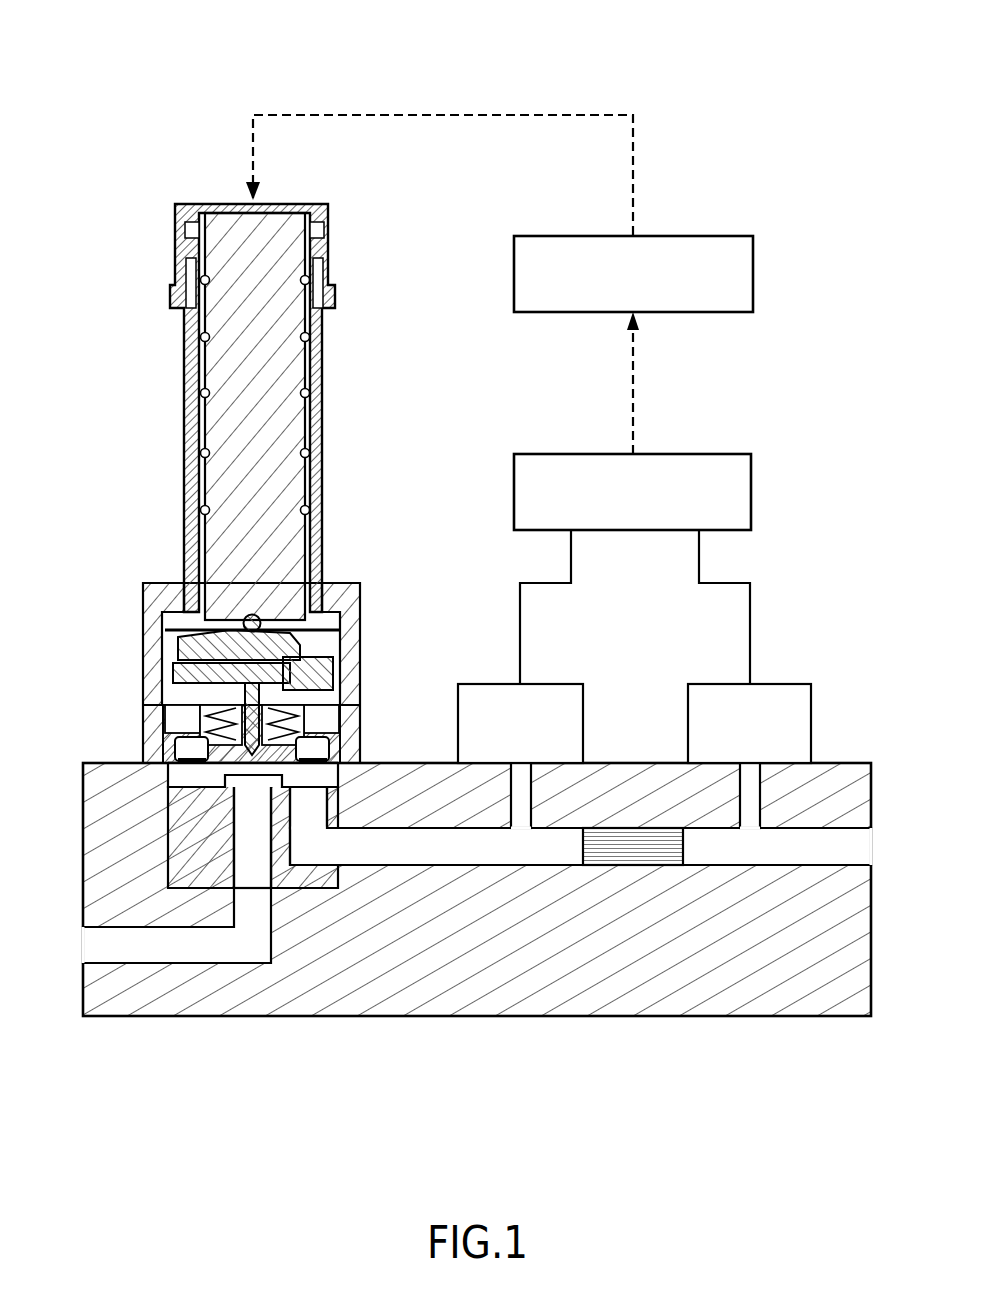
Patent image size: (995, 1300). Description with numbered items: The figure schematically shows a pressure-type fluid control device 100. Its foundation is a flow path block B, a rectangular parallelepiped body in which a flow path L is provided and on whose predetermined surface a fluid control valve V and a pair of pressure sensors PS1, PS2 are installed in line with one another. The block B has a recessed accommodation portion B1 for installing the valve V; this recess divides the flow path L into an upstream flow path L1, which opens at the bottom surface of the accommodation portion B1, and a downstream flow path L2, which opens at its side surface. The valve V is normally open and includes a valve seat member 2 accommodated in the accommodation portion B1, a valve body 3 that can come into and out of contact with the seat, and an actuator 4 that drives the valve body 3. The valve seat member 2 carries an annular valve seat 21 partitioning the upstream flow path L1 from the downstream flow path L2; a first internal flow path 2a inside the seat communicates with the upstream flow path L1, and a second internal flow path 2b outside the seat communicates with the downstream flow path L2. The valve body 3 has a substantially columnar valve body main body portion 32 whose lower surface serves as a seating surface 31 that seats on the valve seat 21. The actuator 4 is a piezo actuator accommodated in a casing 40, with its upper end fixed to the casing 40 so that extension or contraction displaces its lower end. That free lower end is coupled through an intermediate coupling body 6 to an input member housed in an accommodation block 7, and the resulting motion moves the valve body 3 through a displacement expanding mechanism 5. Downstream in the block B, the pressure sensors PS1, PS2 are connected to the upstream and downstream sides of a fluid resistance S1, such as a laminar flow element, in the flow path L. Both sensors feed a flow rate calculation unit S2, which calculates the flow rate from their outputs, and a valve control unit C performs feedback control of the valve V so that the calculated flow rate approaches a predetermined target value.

The fluid control device 100 is at (172, 80).
The fluid control valve V is at (150, 373).
The casing 40 is at (184, 430).
The actuator 4 is at (208, 484).
The intermediate coupling body 6 is at (259, 616).
The accommodation block 7 is at (362, 655).
The displacement expanding mechanism 5 is at (172, 656).
The valve body 3 is at (201, 734).
The valve body main body portion 32 is at (176, 750).
The seating surface 31 is at (330, 772).
The accommodation portion B1 is at (168, 764).
The valve seat 21 is at (222, 767).
The valve seat member 2 is at (177, 868).
The first internal flow path 2a is at (263, 856).
The second internal flow path 2b is at (324, 856).
The upstream flow path L1 is at (207, 946).
The downstream flow path L2 is at (458, 852).
The flow path L is at (435, 1080).
The flow path block B is at (512, 1016).
The fluid resistance S1 is at (650, 866).
The flow rate calculation unit S2 is at (751, 492).
The valve control unit C is at (753, 274).
The pressure sensor PS1 is at (561, 683).
The pressure sensor PS2 is at (792, 683).